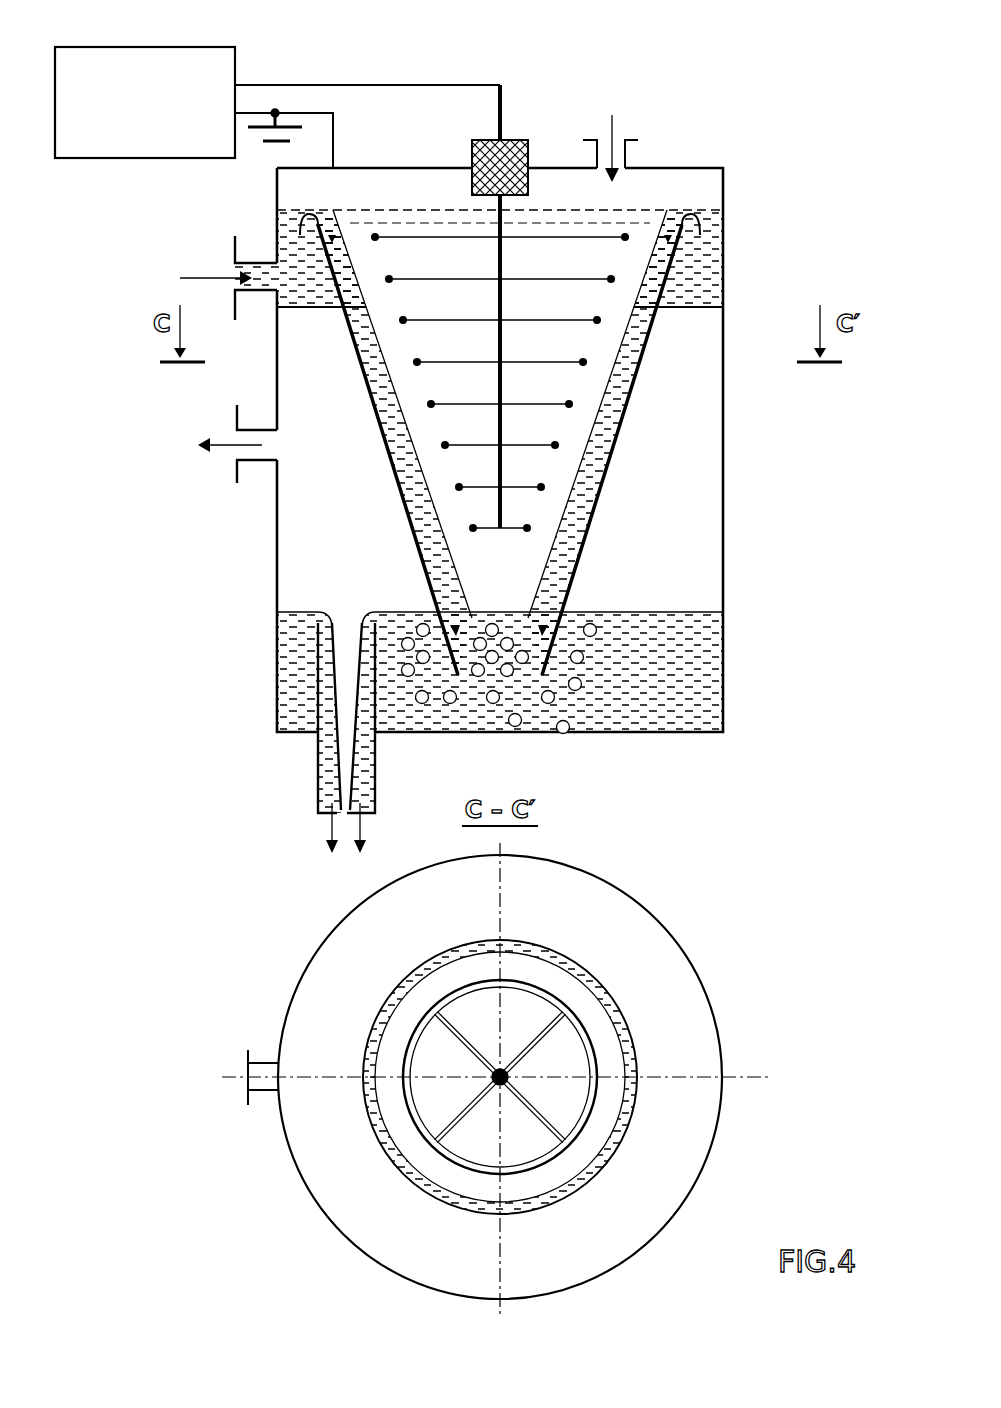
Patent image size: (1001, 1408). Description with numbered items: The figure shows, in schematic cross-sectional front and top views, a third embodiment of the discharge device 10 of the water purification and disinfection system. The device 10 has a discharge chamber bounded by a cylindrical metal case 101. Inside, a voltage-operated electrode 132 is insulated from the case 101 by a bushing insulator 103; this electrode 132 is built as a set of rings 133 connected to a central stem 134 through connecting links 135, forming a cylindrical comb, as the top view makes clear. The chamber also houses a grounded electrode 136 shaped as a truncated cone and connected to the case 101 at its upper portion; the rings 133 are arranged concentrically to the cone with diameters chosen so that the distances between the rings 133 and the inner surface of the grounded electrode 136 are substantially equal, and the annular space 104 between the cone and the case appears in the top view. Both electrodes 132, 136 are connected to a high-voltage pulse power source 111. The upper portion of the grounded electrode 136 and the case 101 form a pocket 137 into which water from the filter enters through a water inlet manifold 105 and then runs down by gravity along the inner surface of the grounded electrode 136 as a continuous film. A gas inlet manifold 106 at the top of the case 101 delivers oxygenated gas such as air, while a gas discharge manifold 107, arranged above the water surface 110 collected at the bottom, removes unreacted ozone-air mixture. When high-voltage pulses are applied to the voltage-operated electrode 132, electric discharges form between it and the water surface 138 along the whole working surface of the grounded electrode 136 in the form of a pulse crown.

The discharge device 10 is at (770, 68).
The case 101 is at (723, 340).
The bushing insulator 103 is at (516, 140).
The annular liquid space 104 is at (577, 1195).
The water inlet manifold 105 is at (237, 248).
The gas inlet manifold 106 is at (640, 143).
The gas discharge manifold 107 is at (238, 480).
The water surface 110 is at (337, 620).
The high-voltage pulse power source 111 is at (115, 47).
The voltage-operated electrode 132 is at (524, 210).
The rings 133 is at (562, 448).
The stem 134 is at (503, 247).
The connecting links 135 is at (540, 1115).
The grounded electrode 136 is at (600, 495).
The pocket 137 is at (303, 243).
The water surface 138 is at (583, 545).